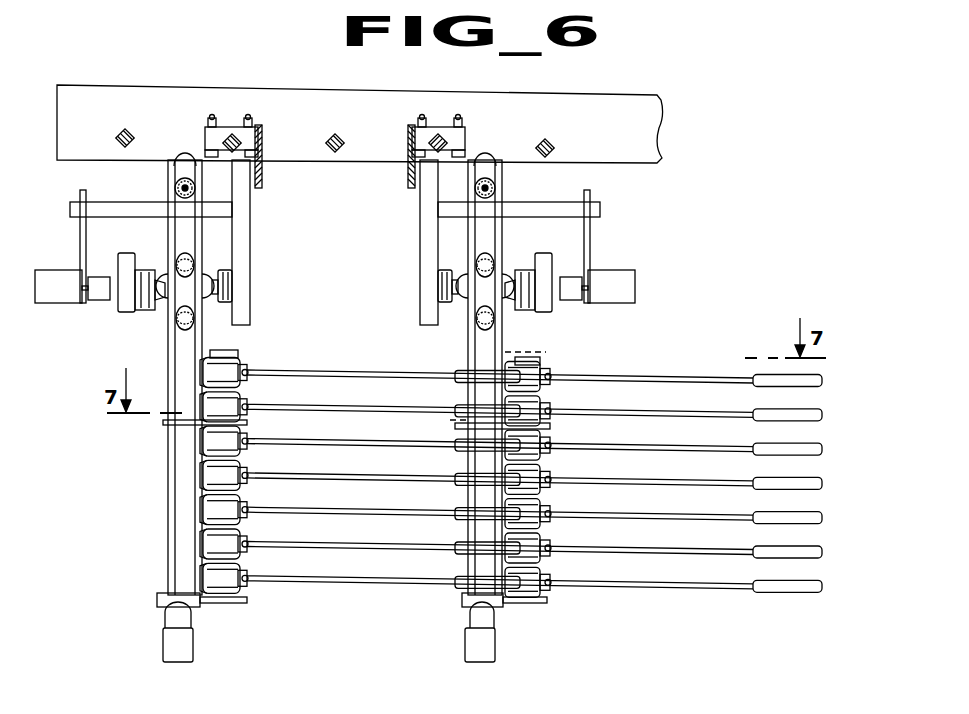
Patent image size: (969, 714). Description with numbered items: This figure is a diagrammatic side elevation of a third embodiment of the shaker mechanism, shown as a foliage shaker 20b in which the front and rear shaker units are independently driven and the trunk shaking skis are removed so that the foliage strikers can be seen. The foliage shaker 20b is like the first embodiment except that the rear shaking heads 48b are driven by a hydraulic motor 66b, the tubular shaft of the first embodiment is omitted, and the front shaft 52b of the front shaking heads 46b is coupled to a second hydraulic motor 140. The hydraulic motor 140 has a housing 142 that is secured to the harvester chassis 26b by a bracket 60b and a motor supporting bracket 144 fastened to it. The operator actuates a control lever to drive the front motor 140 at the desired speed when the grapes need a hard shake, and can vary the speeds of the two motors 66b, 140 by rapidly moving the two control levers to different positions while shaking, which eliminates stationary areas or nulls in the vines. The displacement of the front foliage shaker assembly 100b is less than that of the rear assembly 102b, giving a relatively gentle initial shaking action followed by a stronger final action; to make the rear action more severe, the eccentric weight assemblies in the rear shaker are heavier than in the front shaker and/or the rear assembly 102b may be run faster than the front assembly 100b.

The foliage shaker 20b is at (724, 189).
The harvester chassis 26b is at (664, 114).
The front shaking heads 46b is at (174, 157).
The rear shaking heads 48b is at (498, 158).
The front shaft 52b is at (222, 277).
The bracket 60b is at (246, 228).
The hydraulic motor 66b is at (622, 284).
The front foliage shaker assembly 100b is at (318, 362).
The rear assembly 102b is at (638, 360).
The second hydraulic motor 140 is at (48, 273).
The housing 142 is at (42, 306).
The motor supporting bracket 144 is at (108, 204).